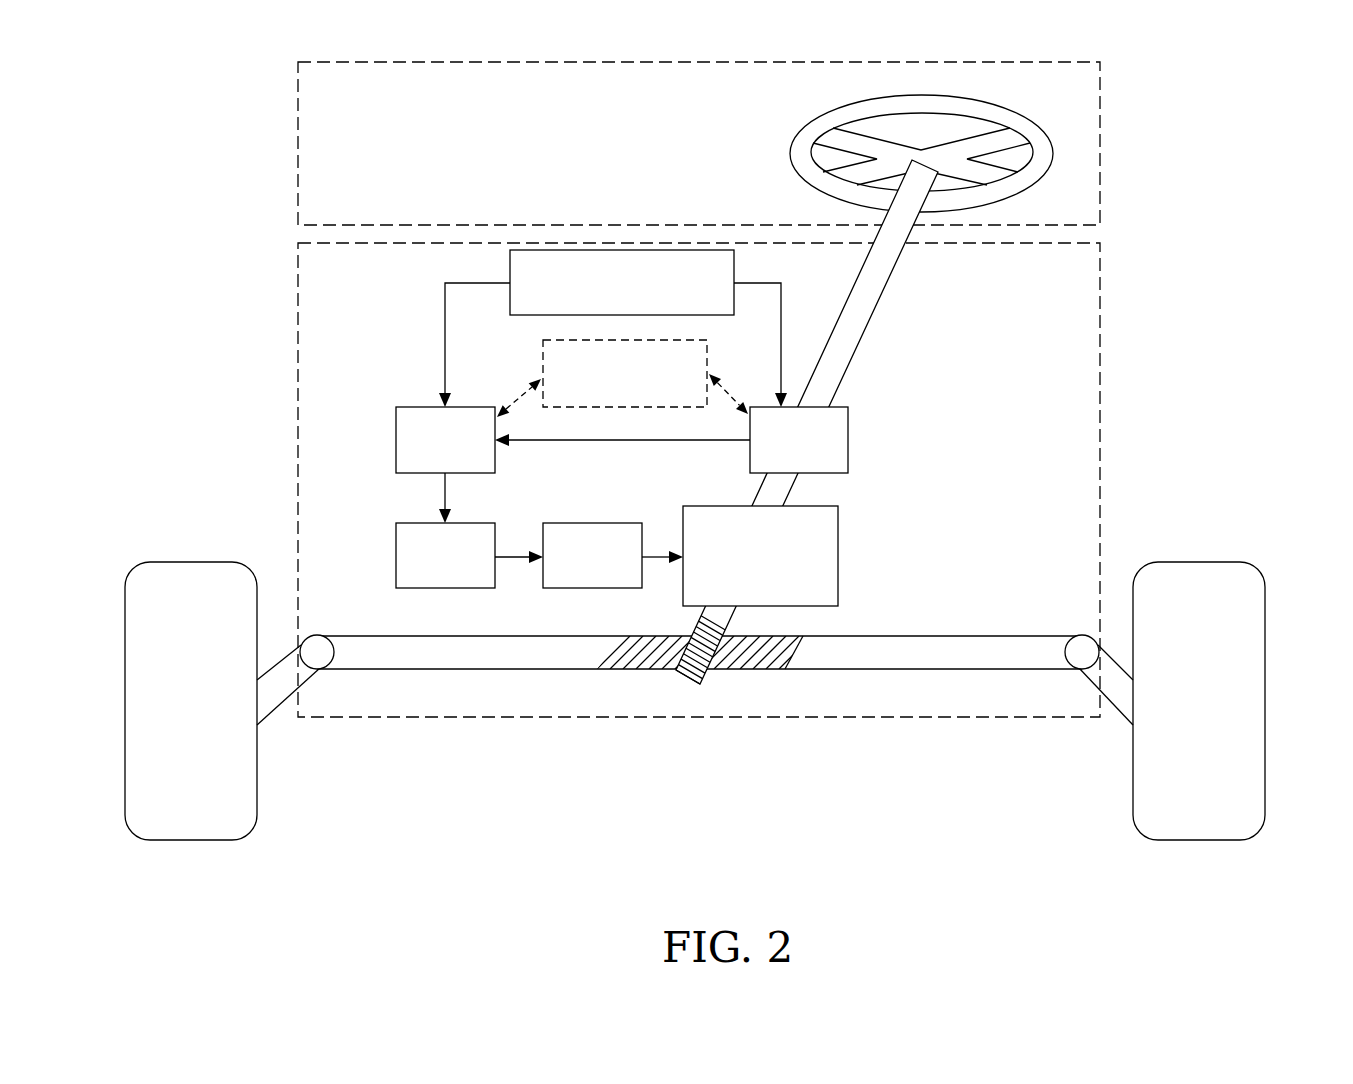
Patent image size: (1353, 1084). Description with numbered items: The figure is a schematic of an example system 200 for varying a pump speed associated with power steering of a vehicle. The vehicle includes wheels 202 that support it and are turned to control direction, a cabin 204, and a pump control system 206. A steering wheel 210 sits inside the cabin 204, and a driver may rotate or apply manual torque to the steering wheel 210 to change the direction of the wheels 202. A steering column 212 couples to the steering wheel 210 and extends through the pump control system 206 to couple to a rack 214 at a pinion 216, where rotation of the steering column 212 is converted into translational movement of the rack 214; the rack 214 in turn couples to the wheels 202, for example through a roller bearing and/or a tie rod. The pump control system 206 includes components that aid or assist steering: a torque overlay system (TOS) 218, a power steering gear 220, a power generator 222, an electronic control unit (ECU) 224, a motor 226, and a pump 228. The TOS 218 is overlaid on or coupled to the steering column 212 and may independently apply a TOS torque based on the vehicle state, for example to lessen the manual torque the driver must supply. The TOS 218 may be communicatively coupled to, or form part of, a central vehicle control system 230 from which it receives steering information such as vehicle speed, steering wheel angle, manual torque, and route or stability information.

The system 200 is at (183, 101).
The wheels 202 is at (210, 840).
The cabin 204 is at (1100, 108).
The pump control system 206 is at (1100, 335).
The steering wheel 210 is at (790, 147).
The steering column 212 is at (877, 305).
The rack 214 is at (462, 669).
The pinion 216 is at (679, 703).
The torque overlay system (TOS) 218 is at (848, 440).
The power steering gear 220 is at (838, 558).
The power generator 222 is at (510, 270).
The electronic control unit (ECU) 224 is at (396, 437).
The motor 226 is at (396, 557).
The pump 228 is at (593, 523).
The central vehicle control system 230 is at (543, 352).